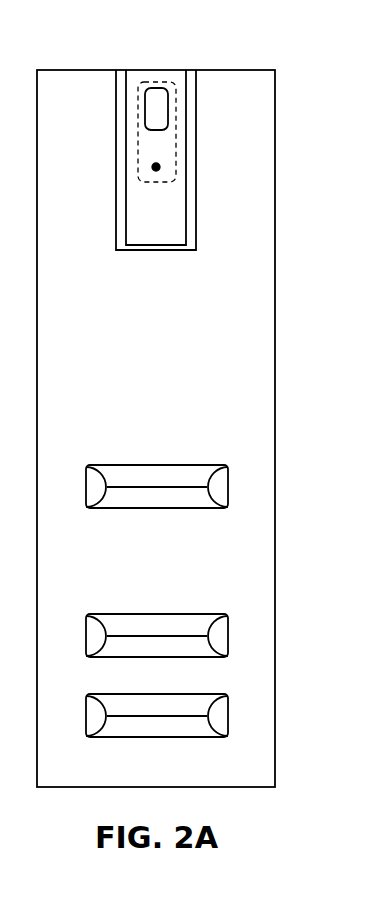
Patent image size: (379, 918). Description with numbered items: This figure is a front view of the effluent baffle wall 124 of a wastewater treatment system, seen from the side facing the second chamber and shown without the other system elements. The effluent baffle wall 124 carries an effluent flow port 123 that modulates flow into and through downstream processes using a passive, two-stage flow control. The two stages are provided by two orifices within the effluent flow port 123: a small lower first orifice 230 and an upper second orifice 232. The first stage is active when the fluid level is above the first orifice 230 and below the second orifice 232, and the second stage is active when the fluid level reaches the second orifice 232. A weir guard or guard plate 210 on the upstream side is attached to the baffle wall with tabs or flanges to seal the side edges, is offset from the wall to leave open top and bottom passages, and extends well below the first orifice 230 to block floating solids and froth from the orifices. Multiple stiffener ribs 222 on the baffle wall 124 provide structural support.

The effluent baffle wall 124 is at (277, 288).
The weir guard or guard plate 210 is at (118, 200).
The effluent flow port 123 is at (160, 82).
The second orifice 232 is at (148, 110).
The first orifice 230 is at (162, 167).
The stiffener ribs 222 is at (158, 463).